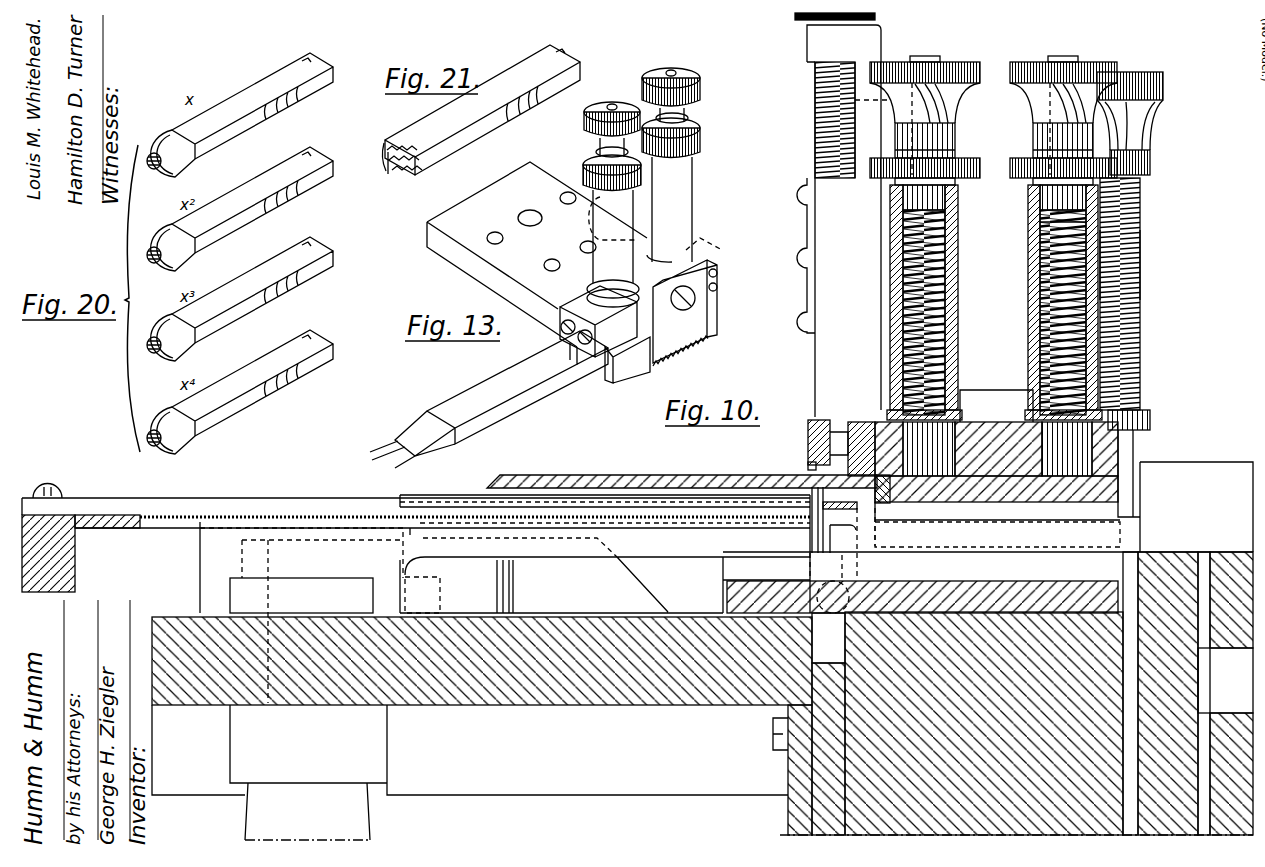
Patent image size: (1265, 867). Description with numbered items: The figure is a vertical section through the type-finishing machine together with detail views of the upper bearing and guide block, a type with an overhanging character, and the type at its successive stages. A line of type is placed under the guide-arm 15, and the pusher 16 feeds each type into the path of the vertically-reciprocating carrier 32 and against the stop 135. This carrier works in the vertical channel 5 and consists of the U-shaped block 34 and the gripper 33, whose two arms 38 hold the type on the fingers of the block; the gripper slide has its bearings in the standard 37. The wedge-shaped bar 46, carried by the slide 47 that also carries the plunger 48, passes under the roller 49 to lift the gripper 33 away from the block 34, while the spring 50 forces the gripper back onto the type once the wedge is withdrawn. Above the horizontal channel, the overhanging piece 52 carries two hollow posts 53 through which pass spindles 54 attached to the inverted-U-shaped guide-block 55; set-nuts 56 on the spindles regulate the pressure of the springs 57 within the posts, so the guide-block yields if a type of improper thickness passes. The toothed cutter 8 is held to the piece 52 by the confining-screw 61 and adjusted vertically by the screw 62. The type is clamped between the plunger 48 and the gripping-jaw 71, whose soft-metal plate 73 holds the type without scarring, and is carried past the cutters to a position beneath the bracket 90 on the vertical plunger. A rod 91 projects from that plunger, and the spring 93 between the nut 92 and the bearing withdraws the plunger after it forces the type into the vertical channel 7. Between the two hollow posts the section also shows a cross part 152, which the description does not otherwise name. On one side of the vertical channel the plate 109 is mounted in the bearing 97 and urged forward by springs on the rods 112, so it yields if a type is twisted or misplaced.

In FIG. 10, the vertical channel 5 is at (812, 553).
In FIG. 10, the vertical channel 7 is at (991, 693).
In FIG. 13, the cutter 8 is at (690, 352).
In FIG. 13, the guide-arm 15 is at (501, 393).
In FIG. 10, the guide-arm 15 is at (682, 473).
In FIG. 13, the pusher 16 is at (385, 453).
In FIG. 10, the pusher 16 is at (480, 488).
In FIG. 10, the vertically-reciprocating carrier 32 is at (834, 412).
In FIG. 10, the gripper 33 is at (810, 444).
In FIG. 10, the U-shaped block 34 is at (816, 724).
In FIG. 10, the standard 37 is at (835, 198).
In FIG. 10, the arms 38 is at (806, 466).
In FIG. 10, the wedge-shaped bar 46 is at (561, 585).
In FIG. 10, the slide 47 is at (301, 612).
In FIG. 10, the plunger 48 is at (610, 540).
In FIG. 10, the roller 49 is at (860, 590).
In FIG. 10, the spring 50 is at (818, 148).
In FIG. 13, the overhanging piece 52 is at (612, 104).
In FIG. 13, the hollow posts 53 is at (623, 219).
In FIG. 10, the hollow posts 53 is at (1040, 230).
In FIG. 13, the spindles 54 is at (672, 70).
In FIG. 10, the spindles 54 is at (925, 60).
In FIG. 13, the guide-block 55 is at (627, 360).
In FIG. 10, the guide-block 55 is at (952, 348).
In FIG. 13, the set-nuts 56 is at (652, 96).
In FIG. 10, the set-nuts 56 is at (950, 110).
In FIG. 10, the springs 57 is at (958, 280).
In FIG. 13, the confining-screw 61 is at (685, 311).
In FIG. 13, the screw 62 is at (684, 250).
In FIG. 10, the gripping-jaw 71 is at (988, 507).
In FIG. 10, the soft-metal plate 73 is at (824, 540).
In FIG. 10, the bracket 90 is at (1140, 436).
In FIG. 10, the rod 91 is at (1138, 329).
In FIG. 10, the nut 92 is at (1138, 118).
In FIG. 10, the spring 93 is at (1138, 272).
In FIG. 10, the bearing 97 is at (1231, 693).
In FIG. 10, the plate 109 is at (1174, 693).
In FIG. 10, the rods 112 is at (1225, 680).
In FIG. 10, the stop 135 is at (860, 506).
In FIG. 10, the cross bar 152 is at (996, 406).